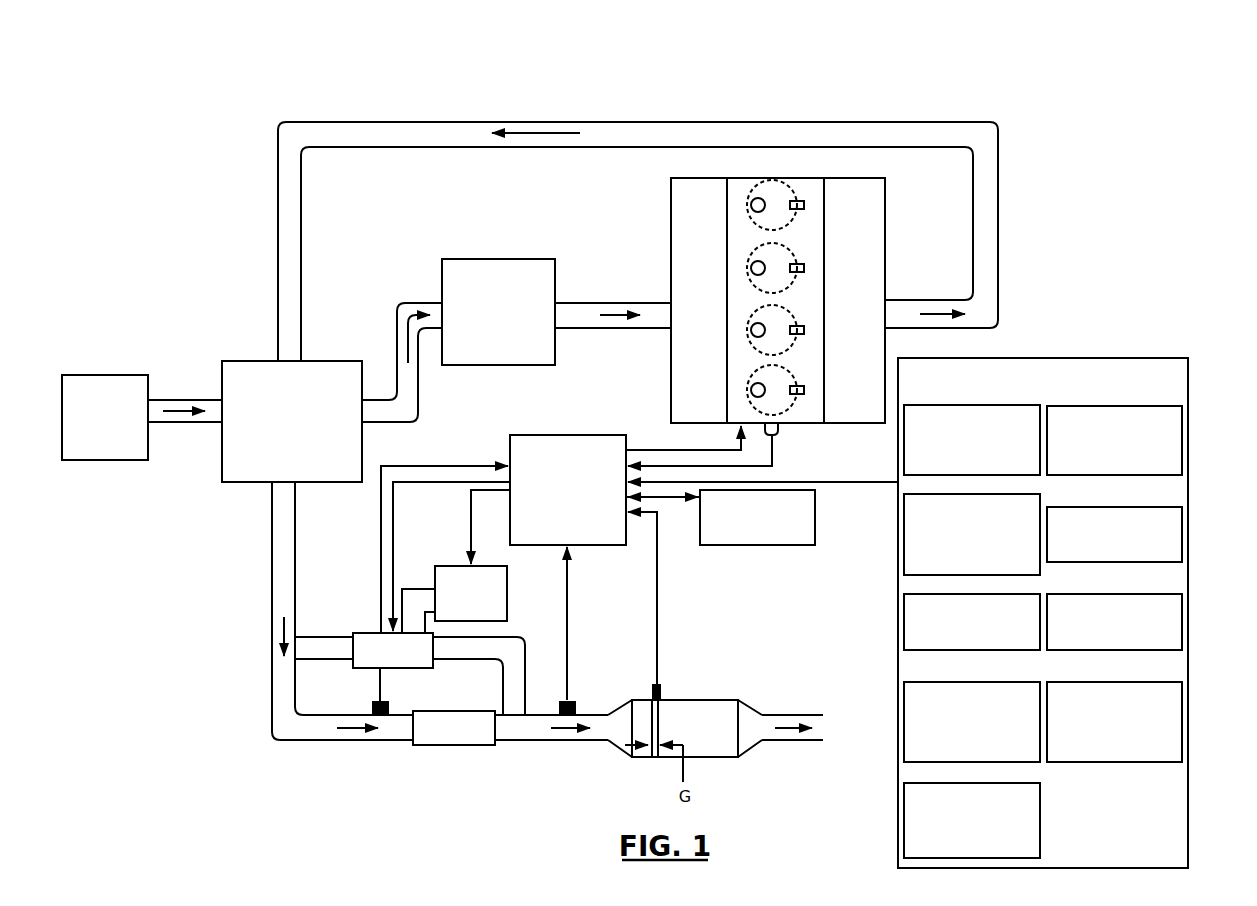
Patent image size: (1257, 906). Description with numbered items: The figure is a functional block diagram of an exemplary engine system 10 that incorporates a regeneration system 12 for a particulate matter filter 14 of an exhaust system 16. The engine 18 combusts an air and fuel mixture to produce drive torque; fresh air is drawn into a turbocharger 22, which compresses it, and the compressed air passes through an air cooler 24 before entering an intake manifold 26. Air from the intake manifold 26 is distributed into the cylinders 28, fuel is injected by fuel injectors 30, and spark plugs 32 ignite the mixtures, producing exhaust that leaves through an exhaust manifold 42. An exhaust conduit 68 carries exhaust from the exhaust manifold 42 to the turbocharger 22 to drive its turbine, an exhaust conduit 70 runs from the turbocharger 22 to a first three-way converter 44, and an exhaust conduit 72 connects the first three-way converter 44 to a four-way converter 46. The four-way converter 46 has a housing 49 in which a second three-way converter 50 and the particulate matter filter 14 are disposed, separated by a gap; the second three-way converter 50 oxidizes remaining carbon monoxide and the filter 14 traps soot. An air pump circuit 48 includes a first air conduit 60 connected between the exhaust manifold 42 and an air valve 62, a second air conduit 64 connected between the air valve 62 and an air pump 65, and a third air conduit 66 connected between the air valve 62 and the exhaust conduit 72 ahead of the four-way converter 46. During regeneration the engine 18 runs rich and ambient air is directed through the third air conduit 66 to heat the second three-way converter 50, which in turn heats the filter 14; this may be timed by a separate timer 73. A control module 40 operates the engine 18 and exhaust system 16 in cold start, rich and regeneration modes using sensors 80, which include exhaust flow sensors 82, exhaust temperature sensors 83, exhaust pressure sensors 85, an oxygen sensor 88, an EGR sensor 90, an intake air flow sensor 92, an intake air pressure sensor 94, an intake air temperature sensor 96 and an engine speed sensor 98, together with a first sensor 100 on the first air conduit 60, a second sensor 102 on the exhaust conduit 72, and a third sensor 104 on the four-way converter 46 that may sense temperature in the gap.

The engine system 10 is at (260, 75).
The regeneration system 12 is at (213, 598).
The particulate matter (PM) filter 14 is at (105, 375).
The exhaust system 16 is at (333, 802).
The engine 18 is at (772, 180).
The turbocharger 22 is at (318, 361).
The air cooler 24 is at (523, 259).
The intake manifold 26 is at (671, 206).
The cylinders 28 is at (793, 188).
The fuel injectors 30 is at (804, 205).
The spark plugs 32 is at (750, 206).
The control module 40 is at (567, 435).
The exhaust manifold 42 is at (887, 190).
The first three-way converter (TWC) 44 is at (460, 745).
The 4-way converter (FWC) 46 is at (738, 700).
The air pump circuit 48 is at (366, 533).
The housing 49 is at (713, 700).
The second three-way converter (TWC) 50 is at (643, 707).
The first air conduit 60 is at (323, 659).
The air valve 62 is at (372, 633).
The second air conduit 64 is at (402, 589).
The air pump 65 is at (507, 598).
The third air conduit 66 is at (503, 662).
The exhaust conduit 68 is at (278, 245).
The exhaust conduit 70 is at (272, 558).
The exhaust conduit 72 is at (540, 740).
The timer 73 is at (817, 508).
The sensors 80 is at (1132, 358).
The exhaust flow sensors 82 is at (958, 405).
The exhaust temperature sensors 83 is at (1182, 435).
The exhaust pressure sensors 85 is at (904, 545).
The oxygen sensor 88 is at (1182, 535).
The EGR sensor 90 is at (904, 620).
The intake air flow sensor 92 is at (1182, 612).
The intake air pressure sensor 94 is at (904, 700).
The intake air temperature sensor 96 is at (1182, 712).
The engine speed sensor 98 is at (904, 810).
The first exhaust flow, pressure and/or temperature sensor 100 is at (388, 702).
The second exhaust flow, pressure and/or temperature sensor 102 is at (577, 702).
The third exhaust flow, pressure and/or temperature sensor 104 is at (660, 692).